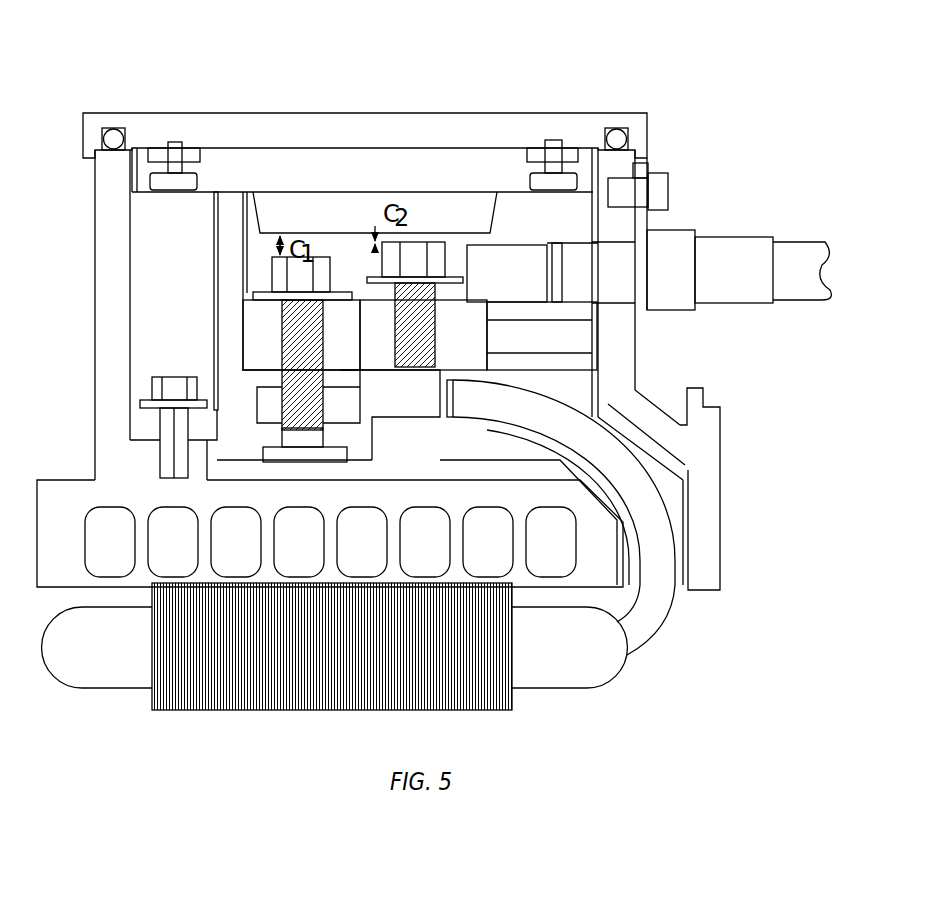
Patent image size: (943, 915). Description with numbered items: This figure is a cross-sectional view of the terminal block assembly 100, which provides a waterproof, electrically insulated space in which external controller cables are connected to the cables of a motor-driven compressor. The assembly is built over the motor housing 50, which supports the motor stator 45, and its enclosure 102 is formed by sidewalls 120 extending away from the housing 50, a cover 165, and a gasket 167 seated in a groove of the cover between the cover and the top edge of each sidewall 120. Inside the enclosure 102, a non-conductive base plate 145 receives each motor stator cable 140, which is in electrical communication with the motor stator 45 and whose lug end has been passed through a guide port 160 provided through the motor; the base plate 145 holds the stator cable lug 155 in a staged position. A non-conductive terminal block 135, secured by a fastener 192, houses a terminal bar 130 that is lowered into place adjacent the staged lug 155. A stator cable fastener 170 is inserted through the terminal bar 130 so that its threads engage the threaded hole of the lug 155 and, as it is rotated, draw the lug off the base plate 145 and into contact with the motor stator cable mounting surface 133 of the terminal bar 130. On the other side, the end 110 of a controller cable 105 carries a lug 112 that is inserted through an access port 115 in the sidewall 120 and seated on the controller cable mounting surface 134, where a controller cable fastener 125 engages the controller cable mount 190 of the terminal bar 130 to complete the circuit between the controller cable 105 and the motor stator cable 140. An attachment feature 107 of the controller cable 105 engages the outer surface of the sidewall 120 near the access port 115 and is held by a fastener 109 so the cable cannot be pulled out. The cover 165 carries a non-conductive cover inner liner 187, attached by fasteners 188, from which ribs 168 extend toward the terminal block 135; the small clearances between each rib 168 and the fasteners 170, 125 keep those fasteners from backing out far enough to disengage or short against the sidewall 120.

The terminal block assembly 100 is at (84, 76).
The enclosure 102 is at (640, 94).
The controller cable 105 is at (793, 257).
The attachment feature 107 is at (647, 270).
The fastener 109 is at (668, 190).
The end 110 is at (512, 238).
The lug 112 is at (373, 293).
The access port 115 is at (623, 310).
The sidewall 120 is at (112, 220).
The controller cable fastener 125 is at (440, 223).
The terminal bar 130 is at (262, 333).
The motor stator cable mounting surface 133 is at (340, 385).
The controller cable mounting surface 134 is at (243, 288).
The terminal block 135 is at (213, 325).
The motor stator cable 140 is at (657, 525).
The base plate 145 is at (263, 473).
The stator cable lug 155 is at (262, 377).
The guide port 160 is at (673, 483).
The cover 165 is at (230, 130).
The gasket 167 is at (113, 130).
The rib 168 is at (410, 257).
The stator cable fastener 170 is at (318, 268).
The cover inner liner 187 is at (290, 168).
The fastener 188 is at (553, 160).
The controller cable mount 190 is at (433, 322).
The fastener 192 is at (175, 388).
The motor stator 45 is at (555, 668).
The housing 50 is at (68, 567).